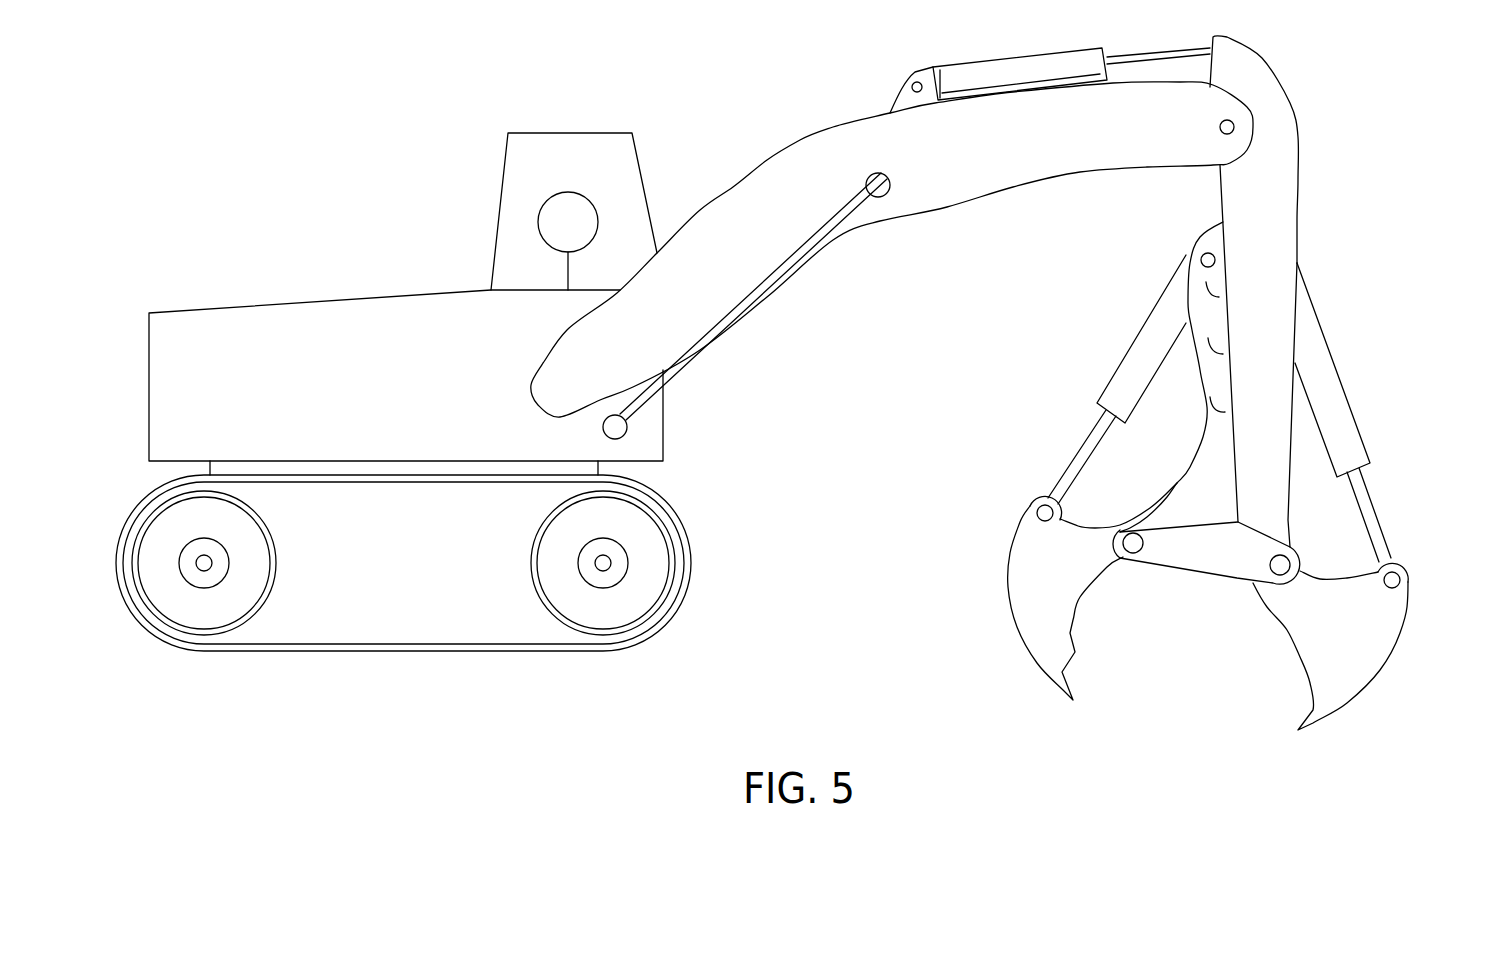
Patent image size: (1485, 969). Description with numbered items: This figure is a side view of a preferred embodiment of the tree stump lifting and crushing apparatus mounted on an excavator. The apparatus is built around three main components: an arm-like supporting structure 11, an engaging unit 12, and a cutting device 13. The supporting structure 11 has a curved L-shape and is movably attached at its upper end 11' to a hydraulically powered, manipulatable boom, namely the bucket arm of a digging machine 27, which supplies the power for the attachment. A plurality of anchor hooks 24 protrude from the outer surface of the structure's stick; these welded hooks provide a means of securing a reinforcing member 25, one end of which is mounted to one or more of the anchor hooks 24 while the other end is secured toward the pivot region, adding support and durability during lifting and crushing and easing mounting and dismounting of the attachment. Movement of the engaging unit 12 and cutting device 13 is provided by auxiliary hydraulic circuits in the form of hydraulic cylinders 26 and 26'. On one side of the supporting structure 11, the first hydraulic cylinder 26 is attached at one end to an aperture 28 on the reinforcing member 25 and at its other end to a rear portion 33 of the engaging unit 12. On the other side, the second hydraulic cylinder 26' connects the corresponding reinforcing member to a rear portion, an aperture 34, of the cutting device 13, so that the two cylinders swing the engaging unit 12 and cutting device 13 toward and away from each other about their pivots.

The digging machine 27 is at (842, 127).
The supporting structure 11 is at (1258, 356).
The upper end 11' is at (1270, 149).
The aperture 28 is at (1203, 251).
The anchor hooks 24 is at (1213, 298).
The first reinforcing member 25 is at (1225, 513).
The first hydraulic cylinder 26 is at (1117, 379).
The second hydraulic cylinder 26' is at (1361, 412).
The rear portion 33 is at (1039, 509).
The aperture 34 is at (1399, 572).
The engaging unit 12 is at (1008, 657).
The cutting device 13 is at (1417, 647).